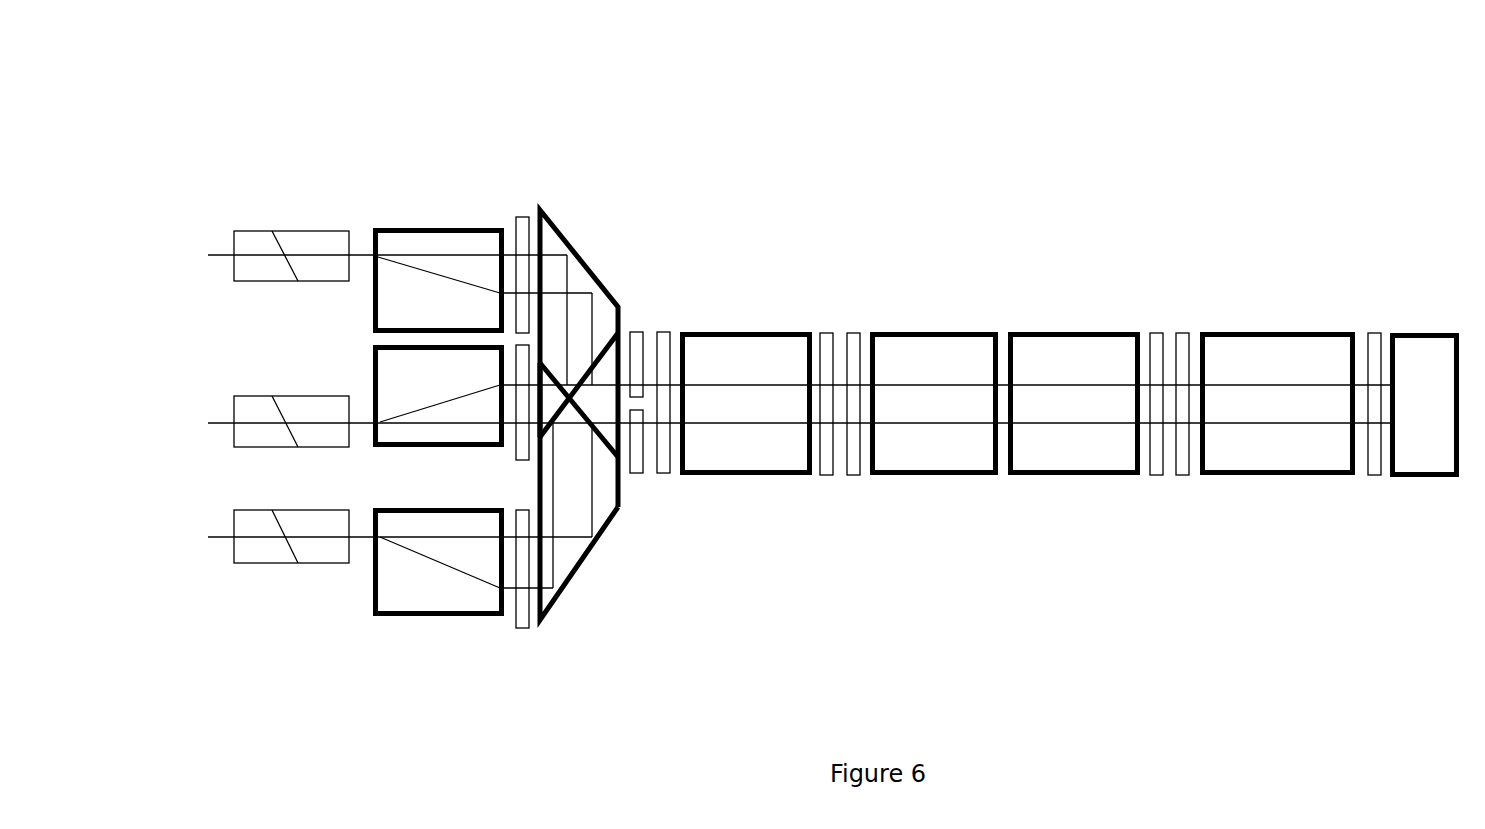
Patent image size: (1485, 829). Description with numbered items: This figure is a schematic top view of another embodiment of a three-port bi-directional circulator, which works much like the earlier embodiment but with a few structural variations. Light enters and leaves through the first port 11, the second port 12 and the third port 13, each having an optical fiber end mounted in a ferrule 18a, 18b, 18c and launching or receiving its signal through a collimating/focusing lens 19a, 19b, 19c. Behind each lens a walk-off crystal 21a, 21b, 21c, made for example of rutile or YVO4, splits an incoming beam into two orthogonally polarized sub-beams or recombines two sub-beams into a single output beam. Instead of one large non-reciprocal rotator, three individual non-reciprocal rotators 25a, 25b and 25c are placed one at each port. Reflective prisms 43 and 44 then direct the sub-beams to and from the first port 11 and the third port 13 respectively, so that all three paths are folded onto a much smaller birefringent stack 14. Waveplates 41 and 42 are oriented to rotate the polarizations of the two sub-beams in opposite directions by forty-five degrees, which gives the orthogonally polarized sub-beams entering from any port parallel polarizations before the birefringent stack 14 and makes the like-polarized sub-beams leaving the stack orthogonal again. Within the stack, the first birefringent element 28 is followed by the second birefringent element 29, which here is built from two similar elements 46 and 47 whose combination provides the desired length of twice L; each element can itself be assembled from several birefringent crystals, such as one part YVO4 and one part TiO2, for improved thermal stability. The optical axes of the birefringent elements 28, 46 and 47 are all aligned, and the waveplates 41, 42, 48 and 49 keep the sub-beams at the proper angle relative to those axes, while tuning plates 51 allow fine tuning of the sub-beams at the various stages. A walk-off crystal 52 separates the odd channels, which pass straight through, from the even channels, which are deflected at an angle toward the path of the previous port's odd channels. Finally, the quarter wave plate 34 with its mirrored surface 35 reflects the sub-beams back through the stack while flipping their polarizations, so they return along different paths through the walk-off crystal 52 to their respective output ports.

The first port 11 is at (273, 178).
The second port 12 is at (205, 380).
The third port 13 is at (285, 602).
The birefringent stack 14 is at (872, 218).
The ferrule 18a is at (247, 243).
The ferrule 18b is at (247, 435).
The ferrule 18c is at (247, 548).
The collimating/focusing lens 19a is at (323, 243).
The collimating/focusing lens 19b is at (298, 408).
The collimating/focusing lens 19c is at (310, 548).
The walk-off crystal 21a is at (452, 243).
The walk-off crystal 21b is at (387, 370).
The walk-off crystal 21c is at (465, 600).
The non-reciprocal rotator 25a is at (517, 217).
The non-reciprocal rotator 25b is at (513, 447).
The non-reciprocal rotator 25c is at (520, 615).
The reflective prism 43 is at (540, 225).
The reflective prism 44 is at (567, 563).
The waveplate 41 is at (643, 338).
The waveplate 42 is at (642, 475).
The tuning plate 51 is at (668, 463).
The first birefringent element 28 is at (747, 348).
The waveplate 48 is at (823, 467).
The second birefringent element 29 is at (960, 332).
The birefringent element 46 is at (999, 509).
The birefringent element 47 is at (1100, 347).
The waveplate 49 is at (1178, 337).
The walk-off crystal 52 is at (1238, 450).
The quarter wave plate 34 is at (1382, 337).
The mirrored surface 35 is at (1432, 452).